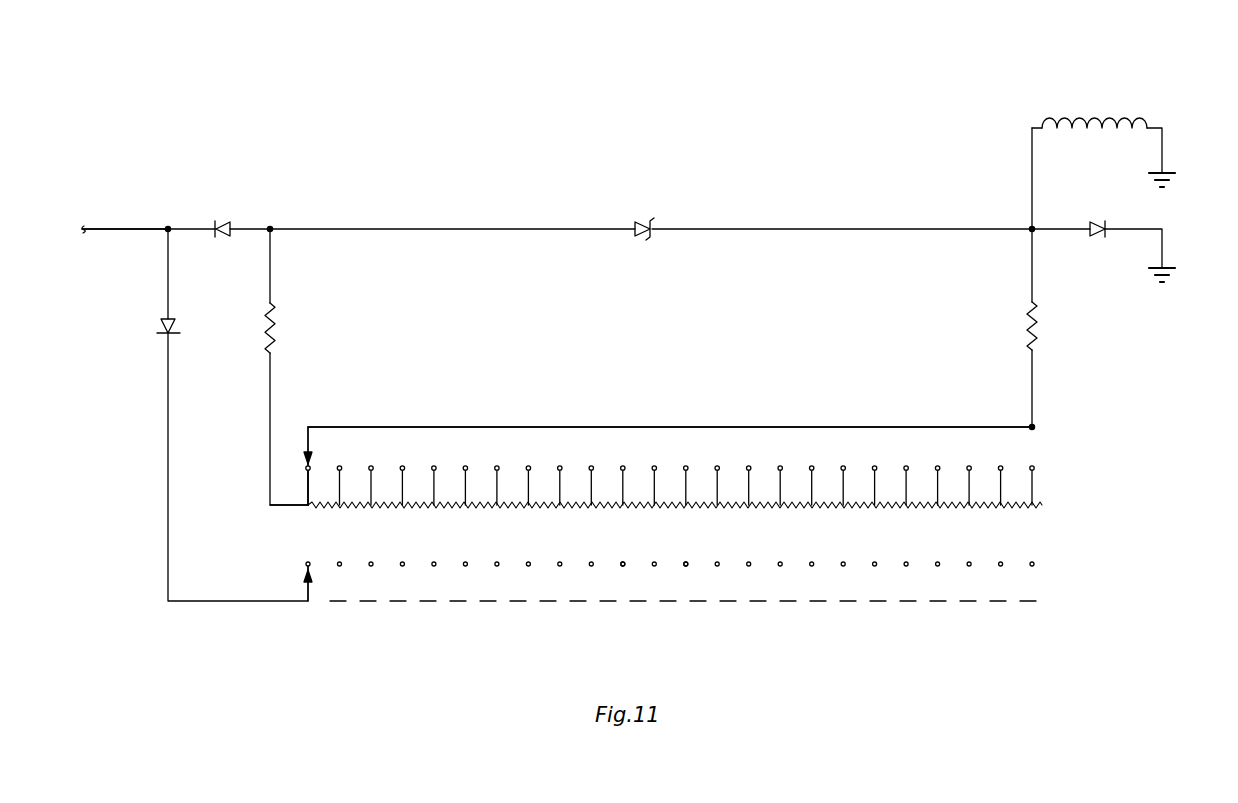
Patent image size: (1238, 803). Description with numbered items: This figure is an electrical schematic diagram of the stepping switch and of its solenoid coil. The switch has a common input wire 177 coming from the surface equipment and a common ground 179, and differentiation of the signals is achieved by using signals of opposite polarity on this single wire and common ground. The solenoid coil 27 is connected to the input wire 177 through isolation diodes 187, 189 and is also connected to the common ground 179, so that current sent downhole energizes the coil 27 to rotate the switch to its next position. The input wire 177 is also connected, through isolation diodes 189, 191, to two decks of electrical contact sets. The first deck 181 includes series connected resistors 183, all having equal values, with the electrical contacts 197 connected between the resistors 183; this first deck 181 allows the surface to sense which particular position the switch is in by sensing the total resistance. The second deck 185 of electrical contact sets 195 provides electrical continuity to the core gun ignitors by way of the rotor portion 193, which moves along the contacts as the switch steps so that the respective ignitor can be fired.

The common input wire 177 is at (110, 229).
The isolation diode 189 is at (222, 222).
The isolation diode 187 is at (642, 218).
The solenoid coil 27 is at (1090, 118).
The common ground 179 is at (1165, 192).
The isolation diode 191 is at (160, 333).
The rotor portion 193 is at (306, 442).
The electrical contacts 197 is at (497, 466).
The series connected resistors 183 is at (728, 503).
The first deck 181 is at (1062, 479).
The second deck 185 is at (1060, 573).
The electrical contact sets 195 is at (623, 568).